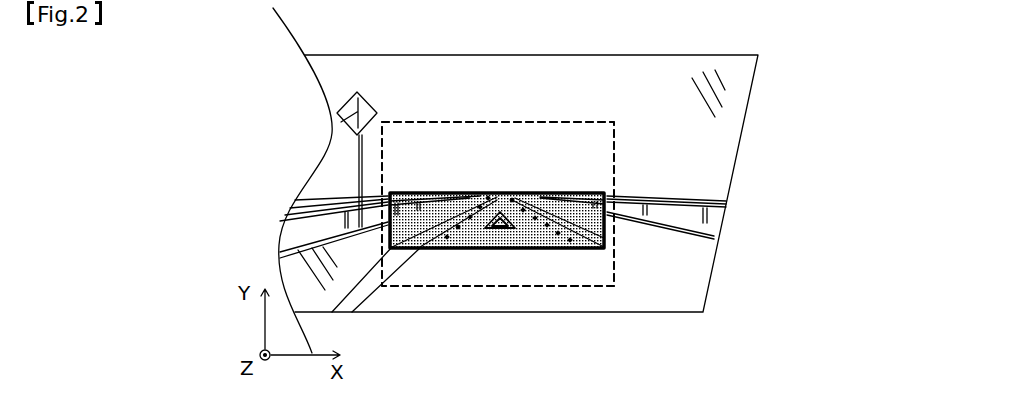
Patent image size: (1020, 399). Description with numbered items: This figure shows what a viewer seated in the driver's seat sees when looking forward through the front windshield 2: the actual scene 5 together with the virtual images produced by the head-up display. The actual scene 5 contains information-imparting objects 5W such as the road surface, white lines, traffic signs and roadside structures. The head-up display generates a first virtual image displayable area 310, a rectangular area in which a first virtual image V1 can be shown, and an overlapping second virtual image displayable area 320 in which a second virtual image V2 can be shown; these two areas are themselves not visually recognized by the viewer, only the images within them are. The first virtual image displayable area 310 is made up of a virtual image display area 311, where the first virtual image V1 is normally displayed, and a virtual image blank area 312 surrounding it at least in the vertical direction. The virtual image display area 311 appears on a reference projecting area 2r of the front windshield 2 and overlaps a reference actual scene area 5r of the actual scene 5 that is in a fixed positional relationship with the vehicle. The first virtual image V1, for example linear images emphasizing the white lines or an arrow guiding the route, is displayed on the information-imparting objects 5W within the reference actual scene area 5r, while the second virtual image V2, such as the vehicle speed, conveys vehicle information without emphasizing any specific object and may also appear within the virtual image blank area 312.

The front windshield 2 is at (728, 72).
The information-imparting object 5W is at (460, 134).
The actual scene 5 is at (557, 220).
The first virtual image displayable area 310 is at (548, 149).
The second virtual image displayable area 320 is at (615, 158).
The virtual image display area 311 is at (589, 281).
The reference projecting area 2r is at (589, 281).
The reference actual scene area 5r is at (590, 224).
The virtual image blank area 312 is at (588, 170).
The first virtual image V1 is at (510, 230).
The second virtual image V2 is at (443, 278).